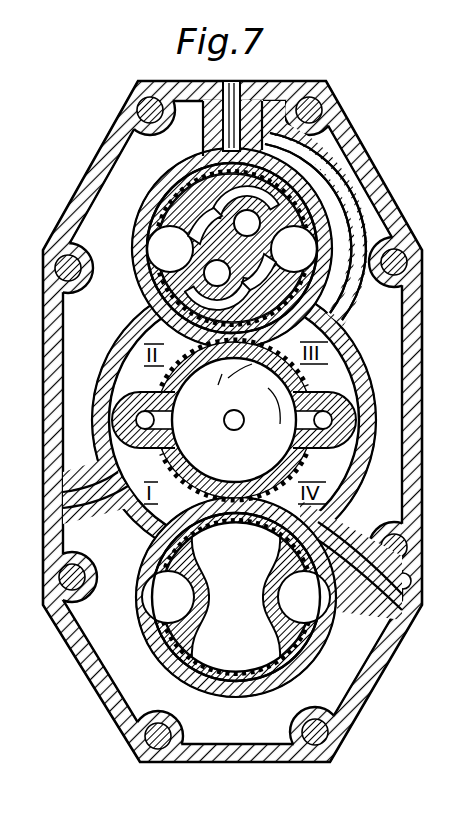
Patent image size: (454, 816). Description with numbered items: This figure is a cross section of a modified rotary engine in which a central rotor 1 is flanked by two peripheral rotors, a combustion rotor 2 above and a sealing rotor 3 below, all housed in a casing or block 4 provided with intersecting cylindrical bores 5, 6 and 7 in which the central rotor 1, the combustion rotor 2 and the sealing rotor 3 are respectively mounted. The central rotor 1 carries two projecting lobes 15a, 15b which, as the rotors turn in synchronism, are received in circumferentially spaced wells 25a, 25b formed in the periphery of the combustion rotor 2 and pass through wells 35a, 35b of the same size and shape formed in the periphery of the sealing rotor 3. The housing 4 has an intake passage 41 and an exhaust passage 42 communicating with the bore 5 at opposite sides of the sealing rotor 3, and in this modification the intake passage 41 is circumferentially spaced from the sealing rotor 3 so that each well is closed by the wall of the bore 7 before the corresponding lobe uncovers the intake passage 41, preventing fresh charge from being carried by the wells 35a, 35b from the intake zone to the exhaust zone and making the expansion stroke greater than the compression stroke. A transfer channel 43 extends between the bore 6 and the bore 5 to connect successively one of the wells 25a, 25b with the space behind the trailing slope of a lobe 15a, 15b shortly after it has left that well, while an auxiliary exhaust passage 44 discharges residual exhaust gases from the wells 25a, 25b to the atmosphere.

The central rotor 1 is at (246, 366).
The combustion rotor 2 is at (183, 177).
The sealing rotor 3 is at (262, 536).
The casing or block 4 is at (350, 108).
The bore 5 is at (340, 383).
The bore 6 is at (146, 236).
The bore 7 is at (152, 604).
The lobe 15a is at (128, 398).
The lobe 15b is at (344, 384).
The well 25a is at (178, 278).
The well 25b is at (304, 280).
The well 35a is at (188, 612).
The well 35b is at (276, 588).
The intake passage 41 is at (58, 502).
The exhaust passage 42 is at (380, 609).
The transfer channel 43 is at (322, 303).
The auxiliary exhaust passage 44 is at (228, 94).